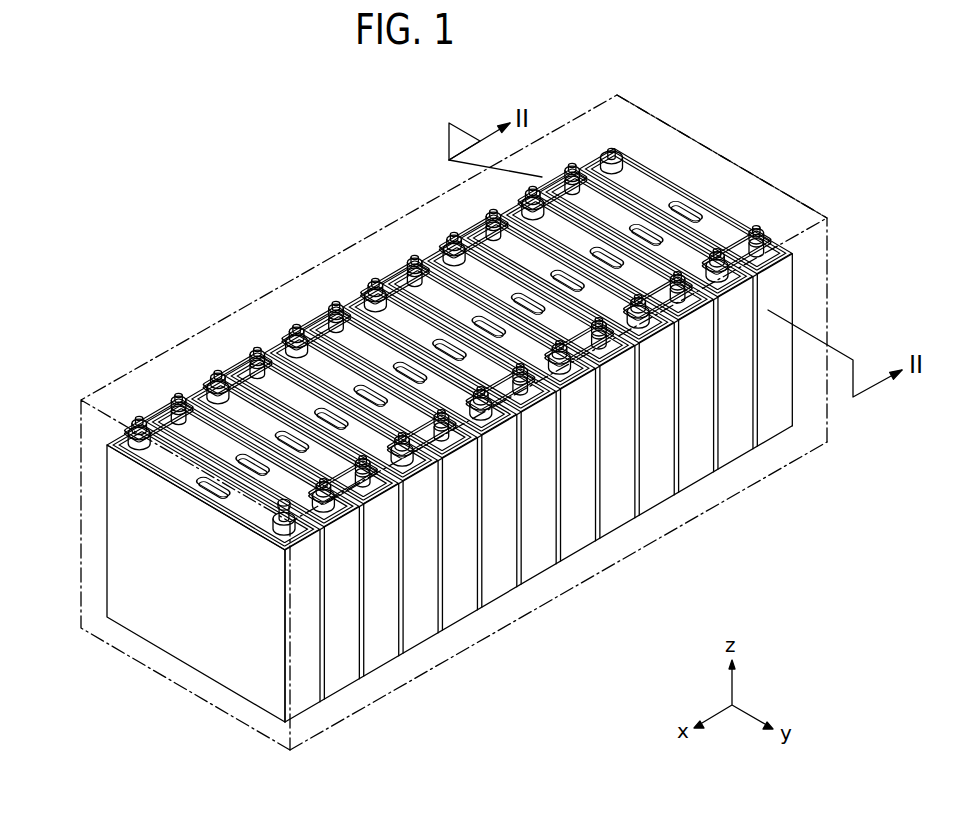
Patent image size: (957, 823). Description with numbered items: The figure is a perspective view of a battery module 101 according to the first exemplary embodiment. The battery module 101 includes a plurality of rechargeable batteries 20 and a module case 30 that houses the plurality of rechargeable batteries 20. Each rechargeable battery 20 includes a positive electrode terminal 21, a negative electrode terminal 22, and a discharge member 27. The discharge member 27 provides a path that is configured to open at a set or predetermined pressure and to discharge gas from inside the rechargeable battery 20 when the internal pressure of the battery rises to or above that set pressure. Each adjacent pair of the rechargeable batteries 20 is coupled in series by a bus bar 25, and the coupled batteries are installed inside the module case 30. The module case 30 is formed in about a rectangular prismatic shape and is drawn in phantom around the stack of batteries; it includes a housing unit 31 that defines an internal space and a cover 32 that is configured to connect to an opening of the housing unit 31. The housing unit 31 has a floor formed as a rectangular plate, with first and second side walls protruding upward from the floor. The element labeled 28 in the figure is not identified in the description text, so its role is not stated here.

The battery module 101 is at (232, 168).
The rechargeable battery 20 is at (439, 458).
The positive electrode terminal 21 is at (140, 430).
The negative electrode terminal 22 is at (181, 403).
The bus bar 25 is at (241, 374).
The discharge member 27 is at (361, 387).
The side wall of cell 28 is at (307, 668).
The module case 30 is at (457, 417).
The housing unit 31 is at (710, 509).
The cover 32 is at (698, 162).